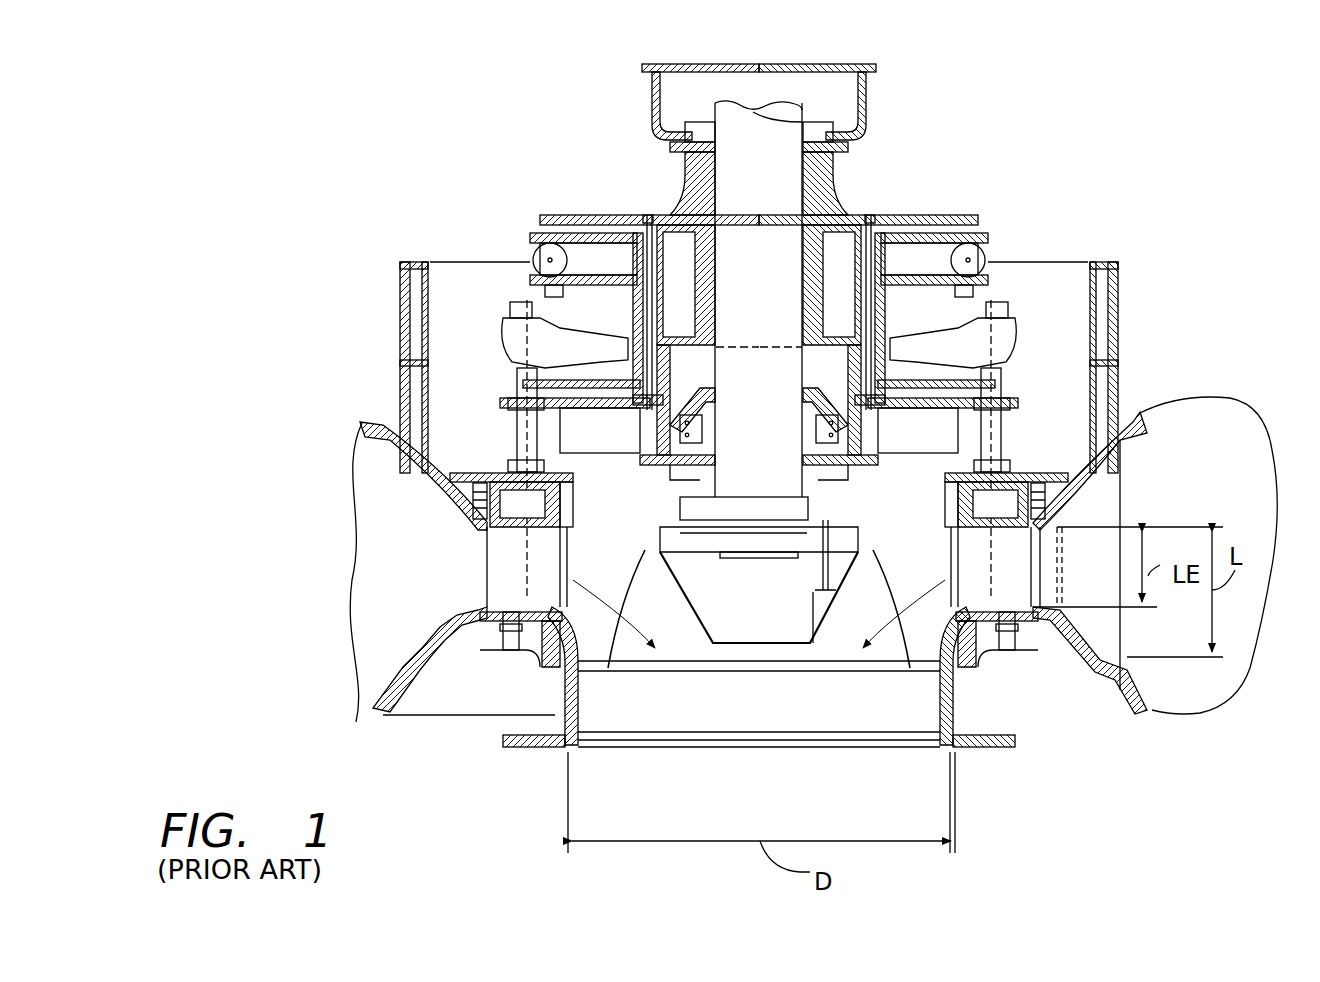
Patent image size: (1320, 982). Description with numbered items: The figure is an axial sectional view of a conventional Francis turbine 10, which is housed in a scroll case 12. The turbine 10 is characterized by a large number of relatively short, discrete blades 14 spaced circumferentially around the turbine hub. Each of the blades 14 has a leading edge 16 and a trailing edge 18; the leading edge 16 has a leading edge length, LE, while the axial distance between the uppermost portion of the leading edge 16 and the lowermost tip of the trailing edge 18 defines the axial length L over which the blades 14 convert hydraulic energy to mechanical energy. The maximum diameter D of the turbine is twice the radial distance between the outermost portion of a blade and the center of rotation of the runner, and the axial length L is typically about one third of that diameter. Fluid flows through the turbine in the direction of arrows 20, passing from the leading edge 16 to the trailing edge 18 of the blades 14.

The Francis turbine 10 is at (823, 640).
The scroll case 12 is at (388, 702).
The blades 14 is at (602, 642).
The blade leading edge 16 is at (560, 548).
The blade trailing edge 18 is at (868, 584).
The arrows 20 is at (522, 602).